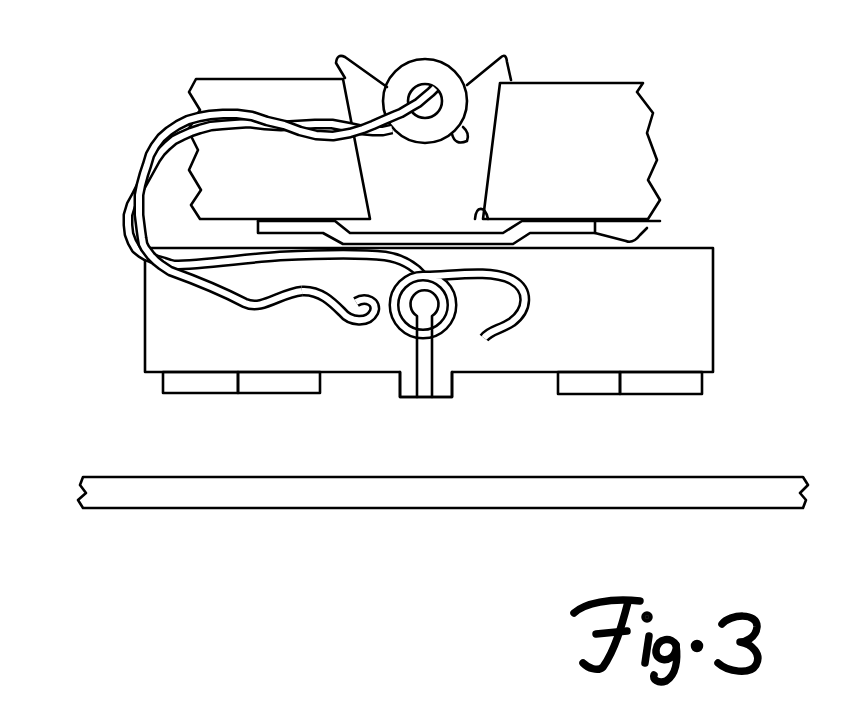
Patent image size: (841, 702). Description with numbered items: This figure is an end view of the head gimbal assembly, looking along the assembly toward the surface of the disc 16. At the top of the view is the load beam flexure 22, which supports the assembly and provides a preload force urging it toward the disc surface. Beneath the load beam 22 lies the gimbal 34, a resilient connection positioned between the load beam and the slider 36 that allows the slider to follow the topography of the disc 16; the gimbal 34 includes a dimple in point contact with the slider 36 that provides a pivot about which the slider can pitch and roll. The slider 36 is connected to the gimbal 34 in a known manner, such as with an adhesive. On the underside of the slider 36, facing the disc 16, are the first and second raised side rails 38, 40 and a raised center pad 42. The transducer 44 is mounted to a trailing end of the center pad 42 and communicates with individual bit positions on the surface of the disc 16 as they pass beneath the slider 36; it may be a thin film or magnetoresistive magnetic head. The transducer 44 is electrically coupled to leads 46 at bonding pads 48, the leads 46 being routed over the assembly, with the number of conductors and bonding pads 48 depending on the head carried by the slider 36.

The disc 16 is at (365, 476).
The load beam flexure 22 is at (592, 72).
The gimbal 34 is at (647, 228).
The slider 36 is at (726, 299).
The first raised side rail 38 is at (150, 395).
The second raised side rail 40 is at (684, 408).
The raised center pad 42 is at (453, 391).
The transducer 44 is at (424, 398).
The leads 46 is at (149, 153).
The bonding pads 48 is at (348, 330).